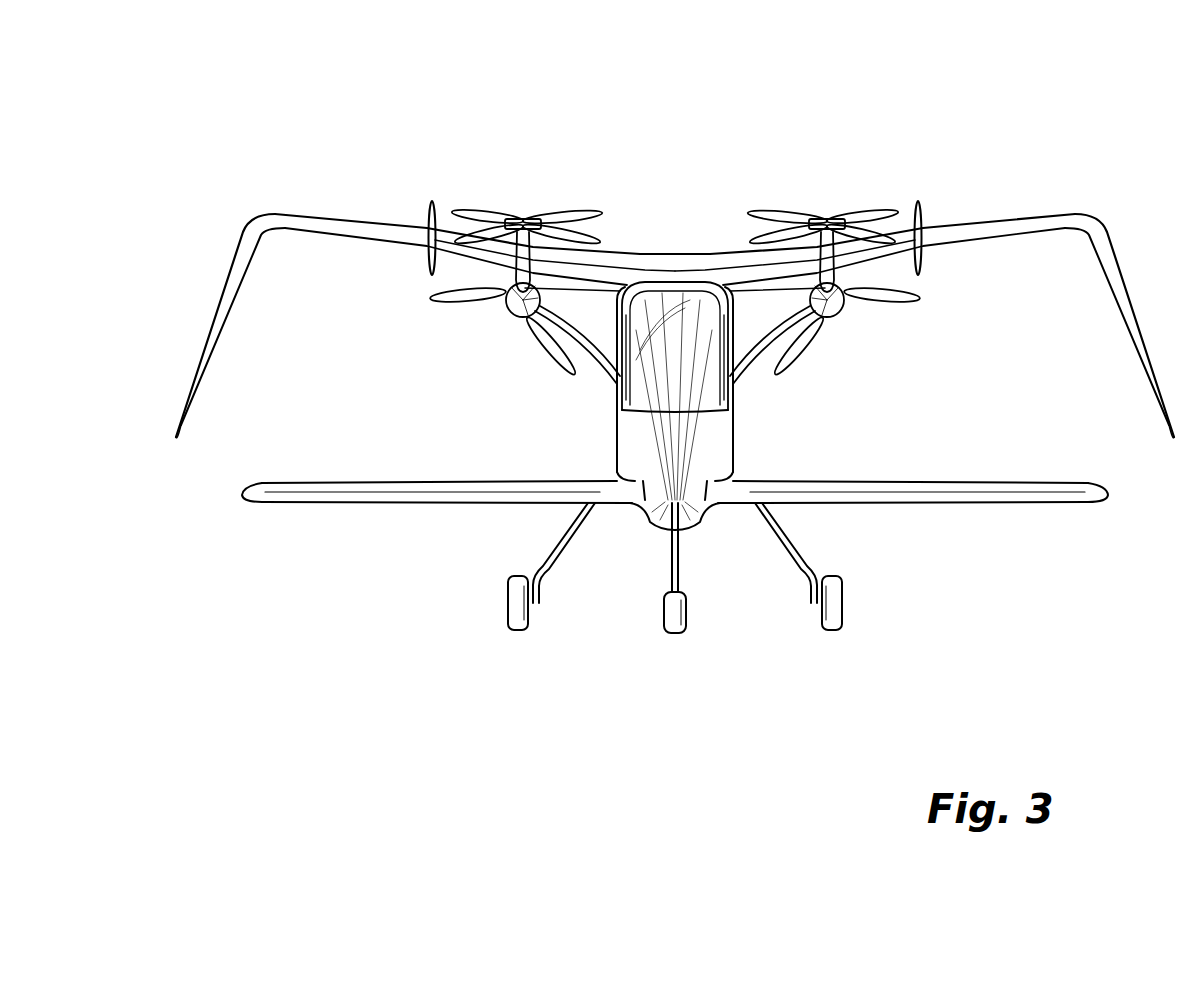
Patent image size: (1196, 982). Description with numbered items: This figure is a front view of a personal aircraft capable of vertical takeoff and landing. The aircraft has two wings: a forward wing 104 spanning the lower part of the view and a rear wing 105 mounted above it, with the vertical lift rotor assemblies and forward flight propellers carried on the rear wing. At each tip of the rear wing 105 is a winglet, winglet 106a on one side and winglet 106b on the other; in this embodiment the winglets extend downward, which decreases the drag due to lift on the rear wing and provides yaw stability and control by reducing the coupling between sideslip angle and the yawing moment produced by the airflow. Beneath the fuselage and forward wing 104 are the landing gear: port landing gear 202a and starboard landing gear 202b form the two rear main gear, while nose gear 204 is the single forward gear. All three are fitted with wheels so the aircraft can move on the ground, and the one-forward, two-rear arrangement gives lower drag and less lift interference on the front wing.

The forward wing 104 is at (317, 500).
The rear wing 105 is at (1020, 217).
The winglet 106a is at (205, 370).
The winglet 106b is at (1147, 377).
The port landing gear 202a is at (815, 558).
The starboard landing gear 202b is at (548, 543).
The nose gear 204 is at (670, 557).